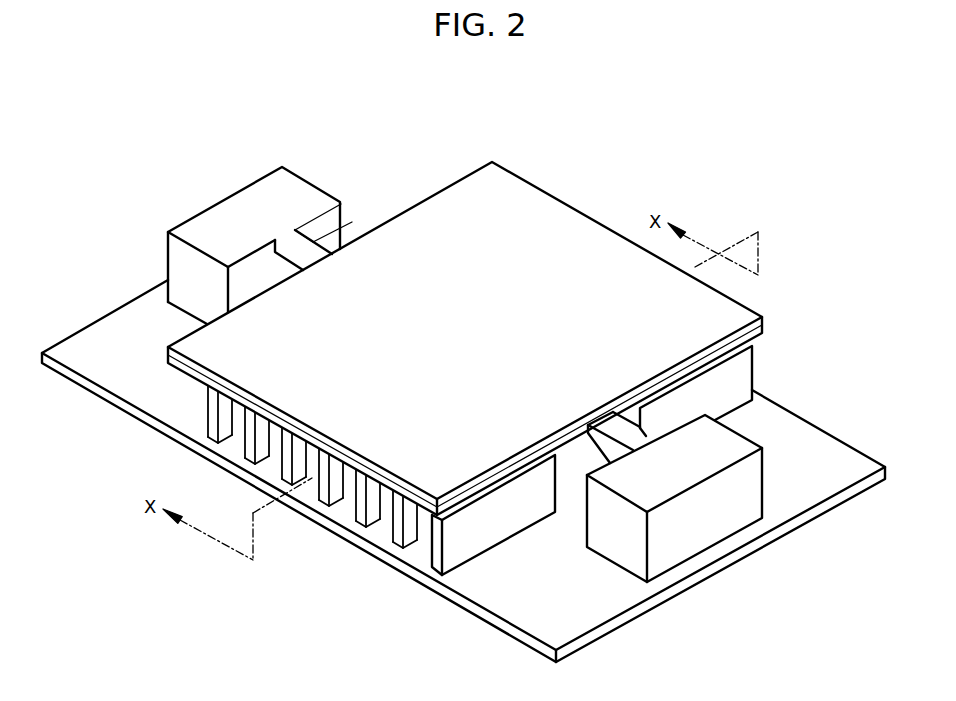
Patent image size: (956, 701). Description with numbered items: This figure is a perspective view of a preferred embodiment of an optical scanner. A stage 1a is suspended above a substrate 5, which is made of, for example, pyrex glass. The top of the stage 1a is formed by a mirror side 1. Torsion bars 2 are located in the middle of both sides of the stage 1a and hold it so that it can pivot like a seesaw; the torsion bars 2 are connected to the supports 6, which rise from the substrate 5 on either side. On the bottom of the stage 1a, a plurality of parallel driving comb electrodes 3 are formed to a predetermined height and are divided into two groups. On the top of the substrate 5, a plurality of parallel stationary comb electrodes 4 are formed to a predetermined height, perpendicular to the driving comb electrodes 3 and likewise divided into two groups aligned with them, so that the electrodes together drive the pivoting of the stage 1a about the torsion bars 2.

The mirror side 1 is at (598, 231).
The stage 1a is at (762, 331).
The torsion bar 2 is at (343, 227).
The driving comb electrode 3 is at (382, 517).
The stationary comb electrode 4 is at (360, 523).
The substrate 5 is at (332, 522).
The support 6 is at (302, 188).